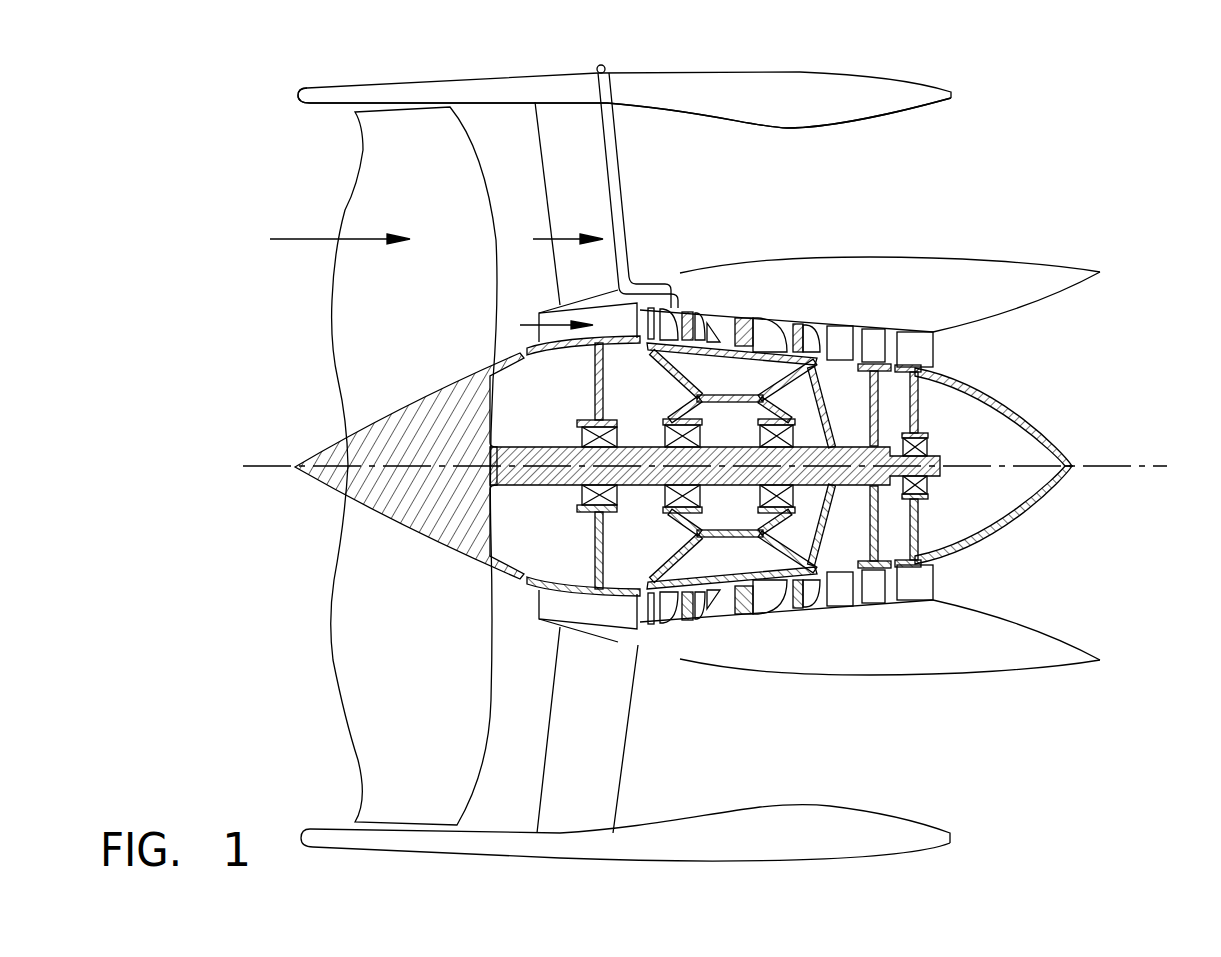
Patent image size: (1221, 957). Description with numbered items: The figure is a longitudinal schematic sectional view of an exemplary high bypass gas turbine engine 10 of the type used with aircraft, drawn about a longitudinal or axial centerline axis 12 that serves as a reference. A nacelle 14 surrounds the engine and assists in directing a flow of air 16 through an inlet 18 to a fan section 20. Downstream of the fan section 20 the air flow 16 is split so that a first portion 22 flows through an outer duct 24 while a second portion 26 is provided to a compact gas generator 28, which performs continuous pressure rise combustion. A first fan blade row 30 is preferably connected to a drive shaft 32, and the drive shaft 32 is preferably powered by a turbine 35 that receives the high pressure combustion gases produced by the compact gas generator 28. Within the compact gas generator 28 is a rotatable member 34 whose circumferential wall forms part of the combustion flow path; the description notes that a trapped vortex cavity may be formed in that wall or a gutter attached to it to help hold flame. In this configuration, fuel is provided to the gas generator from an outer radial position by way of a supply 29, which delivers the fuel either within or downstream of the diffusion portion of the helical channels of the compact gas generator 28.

The gas turbine engine 10 is at (1114, 132).
The longitudinal centerline axis 12 is at (1099, 467).
The nacelle 14 is at (353, 88).
The flow of air 16 is at (300, 238).
The inlet 18 is at (302, 97).
The fan section 20 is at (345, 737).
The first portion of air flow 22 is at (563, 238).
The outer duct 24 is at (710, 115).
The second portion of air flow 26 is at (523, 325).
The compact gas generator 28 is at (689, 634).
The fuel supply 29 is at (606, 158).
The first fan blade row 30 is at (447, 793).
The drive shaft 32 is at (558, 443).
The rotatable member 34 is at (790, 316).
The turbine 35 is at (873, 413).